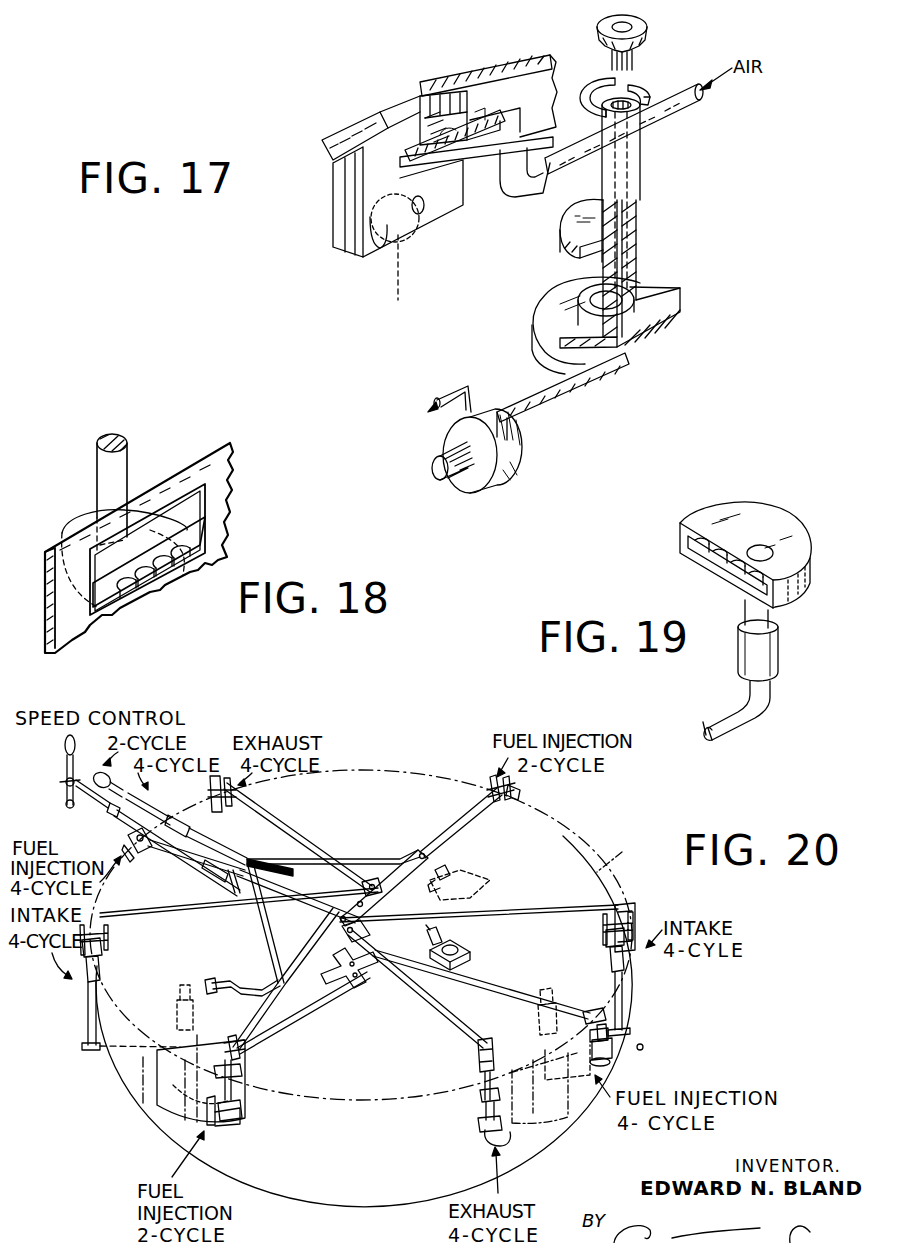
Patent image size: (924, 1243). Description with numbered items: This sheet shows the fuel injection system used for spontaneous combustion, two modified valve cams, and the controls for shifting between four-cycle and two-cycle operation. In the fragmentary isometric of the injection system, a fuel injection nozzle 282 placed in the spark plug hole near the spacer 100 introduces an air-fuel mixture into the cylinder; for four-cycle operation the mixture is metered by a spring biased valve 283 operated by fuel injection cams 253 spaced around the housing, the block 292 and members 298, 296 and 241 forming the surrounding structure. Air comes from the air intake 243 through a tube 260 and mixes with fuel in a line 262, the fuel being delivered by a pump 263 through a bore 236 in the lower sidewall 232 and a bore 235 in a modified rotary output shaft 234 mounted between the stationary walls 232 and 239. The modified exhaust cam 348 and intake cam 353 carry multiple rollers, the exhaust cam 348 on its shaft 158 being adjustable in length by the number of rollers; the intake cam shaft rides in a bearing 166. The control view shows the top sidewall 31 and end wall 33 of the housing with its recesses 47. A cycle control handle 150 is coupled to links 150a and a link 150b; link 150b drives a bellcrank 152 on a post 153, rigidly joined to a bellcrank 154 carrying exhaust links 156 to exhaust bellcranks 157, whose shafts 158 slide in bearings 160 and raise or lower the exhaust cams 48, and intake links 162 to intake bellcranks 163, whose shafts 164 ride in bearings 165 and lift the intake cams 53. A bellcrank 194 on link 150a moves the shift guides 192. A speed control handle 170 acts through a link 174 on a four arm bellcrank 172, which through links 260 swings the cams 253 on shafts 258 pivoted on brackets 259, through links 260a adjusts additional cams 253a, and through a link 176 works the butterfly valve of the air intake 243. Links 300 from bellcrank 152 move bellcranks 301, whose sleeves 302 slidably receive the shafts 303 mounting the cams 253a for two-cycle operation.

In FIG. 17, the spacer 100 is at (318, 156).
In FIG. 17, the support rail 298 is at (420, 143).
In FIG. 17, the guide member 296 is at (463, 88).
In FIG. 17, the housing channel 241 is at (487, 78).
In FIG. 17, the fuel injection nozzle 282 is at (473, 147).
In FIG. 17, the spring biased valve 283 is at (422, 200).
In FIG. 17, the circumferential end wall 33 is at (427, 240).
In FIG. 18, the circumferential end wall 33 is at (230, 477).
In FIG. 20, the circumferential end wall 33 is at (425, 1167).
In FIG. 17, the block 292 is at (357, 258).
In FIG. 17, the fuel injection cam 253 is at (395, 258).
In FIG. 20, the fuel injection cam 253 is at (603, 1058).
In FIG. 17, the tube / links 260 is at (683, 100).
In FIG. 20, the tube / links 260 is at (177, 853).
In FIG. 17, the line 262 is at (522, 192).
In FIG. 17, the stationary wall 239 is at (567, 235).
In FIG. 17, the modified rotary output shaft 234 is at (633, 252).
In FIG. 17, the bore 235 is at (623, 290).
In FIG. 17, the lower sidewall 232 is at (548, 340).
In FIG. 17, the bore 236 is at (577, 365).
In FIG. 17, the pump 263 is at (513, 457).
In FIG. 18, the shaft 158 is at (127, 455).
In FIG. 20, the shaft 158 is at (490, 1128).
In FIG. 18, the exhaust cam 348 is at (190, 517).
In FIG. 19, the intake cam 353 is at (800, 600).
In FIG. 19, the bearing 166 is at (778, 627).
In FIG. 20, the bearing 166 is at (543, 1033).
In FIG. 20, the speed control handle 170 is at (62, 770).
In FIG. 20, the cycle control handle 150 is at (160, 810).
In FIG. 20, the link 150a is at (368, 860).
In FIG. 20, the link 150b is at (290, 872).
In FIG. 20, the shaft 258 is at (135, 842).
In FIG. 20, the bracket 259 is at (135, 845).
In FIG. 20, the intake link 162 is at (180, 909).
In FIG. 20, the link 174 is at (233, 878).
In FIG. 20, the bellcrank 154 is at (380, 892).
In FIG. 20, the bellcrank 152 is at (342, 914).
In FIG. 20, the post 153 is at (370, 928).
In FIG. 20, the link 300 is at (463, 812).
In FIG. 20, the link 260a is at (463, 825).
In FIG. 20, the four arm bellcrank 172 is at (368, 978).
In FIG. 20, the bellcrank 194 is at (262, 985).
In FIG. 20, the link 176 is at (430, 945).
In FIG. 20, the air intake 243 is at (463, 950).
In FIG. 20, the shift guide 192 is at (480, 873).
In FIG. 20, the top sidewall 31 is at (616, 851).
In FIG. 20, the bellcrank 301 is at (487, 785).
In FIG. 20, the sleeve 302 is at (512, 792).
In FIG. 20, the shaft 303 is at (512, 783).
In FIG. 20, the additional fuel injection cam 253a is at (222, 1125).
In FIG. 20, the stop means or recess 47 is at (376, 1093).
In FIG. 20, the intake cam 53 is at (185, 1000).
In FIG. 20, the bearing / shaft 165 is at (173, 1033).
In FIG. 20, the shaft 164 is at (87, 1007).
In FIG. 20, the intake bellcrank 163 is at (630, 920).
In FIG. 20, the exhaust bellcrank 157 is at (478, 1060).
In FIG. 20, the bearing 160 is at (493, 1096).
In FIG. 20, the exhaust cam 48 is at (500, 1133).
In FIG. 20, the exhaust link 156 is at (291, 826).